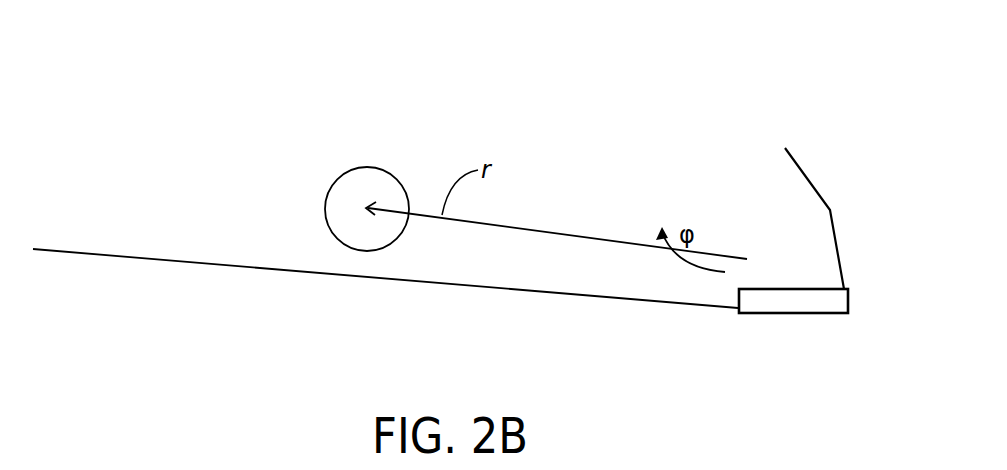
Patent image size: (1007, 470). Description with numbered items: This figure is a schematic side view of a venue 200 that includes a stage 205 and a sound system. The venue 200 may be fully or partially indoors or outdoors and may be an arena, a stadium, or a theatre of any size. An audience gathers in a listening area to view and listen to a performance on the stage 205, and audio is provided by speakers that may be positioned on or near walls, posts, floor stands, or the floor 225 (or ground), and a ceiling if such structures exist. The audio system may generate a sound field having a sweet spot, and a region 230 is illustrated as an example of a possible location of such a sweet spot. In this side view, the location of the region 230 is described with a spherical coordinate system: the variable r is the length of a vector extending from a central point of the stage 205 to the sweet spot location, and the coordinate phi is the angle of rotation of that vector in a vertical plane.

The venue 200 is at (716, 70).
The stage 205 is at (787, 314).
The floor 225 is at (190, 263).
The region 230 is at (347, 170).